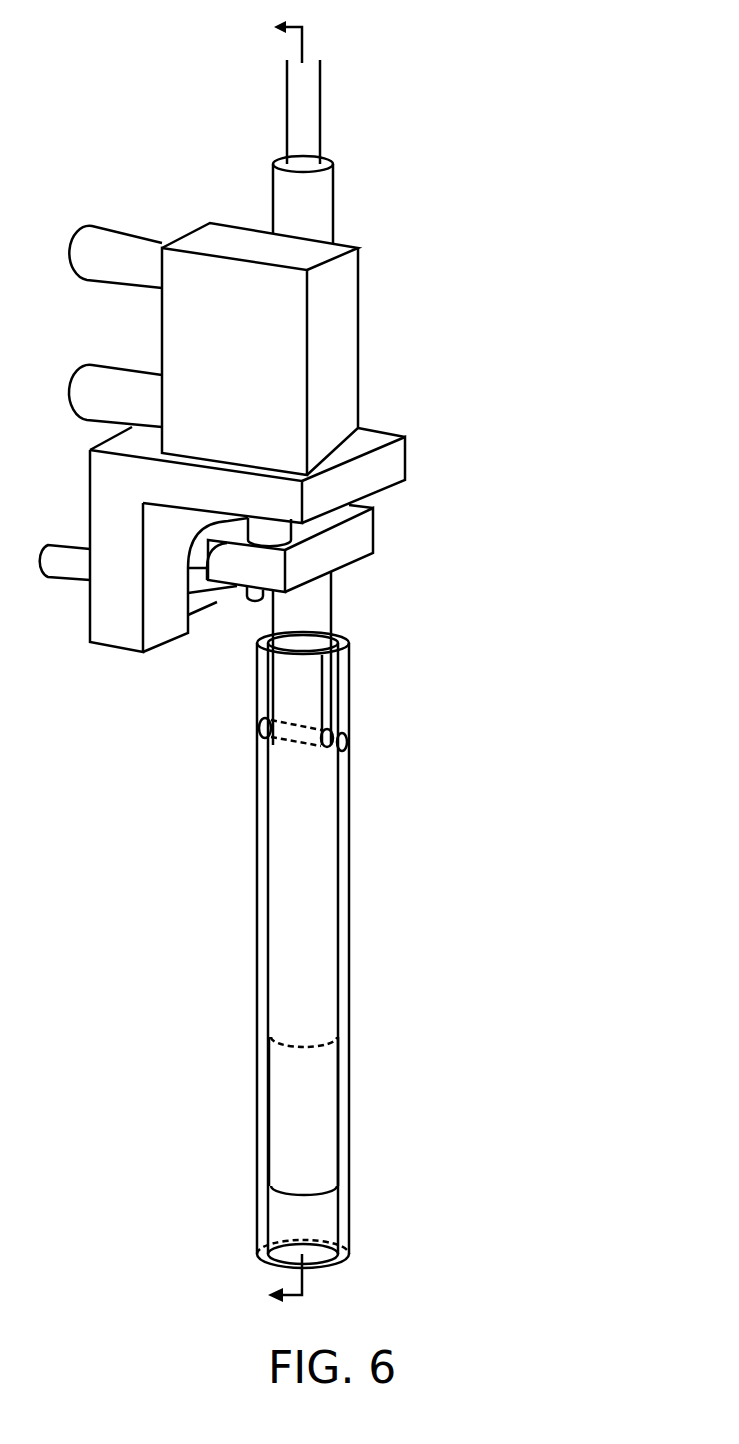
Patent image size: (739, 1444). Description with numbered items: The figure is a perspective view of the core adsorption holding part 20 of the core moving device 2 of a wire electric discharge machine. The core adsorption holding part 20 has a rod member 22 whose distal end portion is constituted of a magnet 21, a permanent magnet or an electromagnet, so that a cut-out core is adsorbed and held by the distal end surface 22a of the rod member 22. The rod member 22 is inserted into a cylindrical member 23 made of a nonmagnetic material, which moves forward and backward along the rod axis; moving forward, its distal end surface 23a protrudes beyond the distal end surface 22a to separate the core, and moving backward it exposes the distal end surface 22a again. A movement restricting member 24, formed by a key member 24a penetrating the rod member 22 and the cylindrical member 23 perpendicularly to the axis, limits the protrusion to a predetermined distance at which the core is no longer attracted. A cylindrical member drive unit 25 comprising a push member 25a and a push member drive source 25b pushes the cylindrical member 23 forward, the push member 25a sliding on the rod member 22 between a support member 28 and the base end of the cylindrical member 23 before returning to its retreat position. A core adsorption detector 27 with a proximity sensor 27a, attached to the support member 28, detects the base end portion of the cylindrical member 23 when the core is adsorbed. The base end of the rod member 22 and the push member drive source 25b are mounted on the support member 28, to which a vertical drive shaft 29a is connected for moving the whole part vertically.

The core moving device 2 is at (215, 82).
The core adsorption holding part 20 is at (172, 200).
The magnet 21 is at (300, 1150).
The rod member 22 is at (300, 1110).
The distal end surface of the rod member 22a is at (297, 1197).
The cylindrical member 23 is at (348, 940).
The distal end surface of the cylindrical member 23a is at (325, 1268).
The movement restricting member 24 is at (433, 668).
The key member 24a is at (348, 742).
The cylindrical member drive unit 25 is at (386, 407).
The push member 25a is at (357, 543).
The push member drive source 25b is at (332, 340).
The core adsorption detector 27 is at (183, 637).
The proximity sensor 27a is at (230, 592).
The support member 28 is at (407, 450).
The vertical drive shaft 29a is at (322, 97).